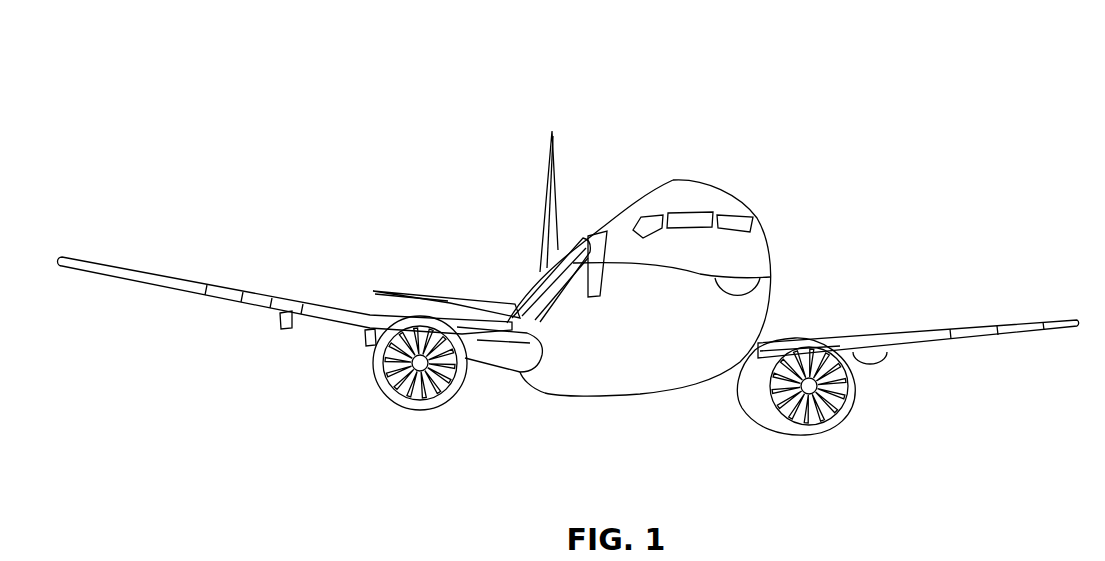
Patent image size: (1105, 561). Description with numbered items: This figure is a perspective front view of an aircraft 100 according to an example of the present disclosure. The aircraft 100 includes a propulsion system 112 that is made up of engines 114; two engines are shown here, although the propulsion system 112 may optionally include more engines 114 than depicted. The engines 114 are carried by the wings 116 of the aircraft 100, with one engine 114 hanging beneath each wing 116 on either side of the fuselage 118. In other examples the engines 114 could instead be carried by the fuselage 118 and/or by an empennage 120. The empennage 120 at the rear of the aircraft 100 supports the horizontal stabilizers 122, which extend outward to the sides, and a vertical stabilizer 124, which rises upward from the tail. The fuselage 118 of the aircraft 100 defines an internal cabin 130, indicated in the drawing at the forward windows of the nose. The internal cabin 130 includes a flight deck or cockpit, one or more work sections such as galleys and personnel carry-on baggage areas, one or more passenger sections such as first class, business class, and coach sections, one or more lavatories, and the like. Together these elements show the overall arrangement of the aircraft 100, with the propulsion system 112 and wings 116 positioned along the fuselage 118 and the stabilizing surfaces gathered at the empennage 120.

The aircraft 100 is at (317, 81).
The propulsion system 112 is at (889, 422).
The engines 114 is at (413, 410).
The wings 116 is at (197, 285).
The fuselage 118 is at (768, 247).
The empennage 120 is at (540, 275).
The horizontal stabilizers 122 is at (412, 293).
The vertical stabilizer 124 is at (548, 175).
The internal cabin 130 is at (733, 220).